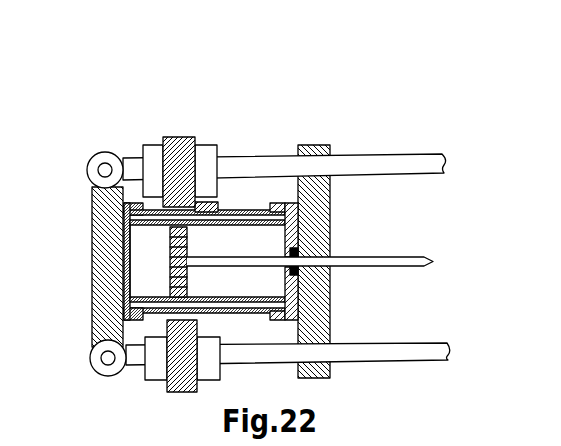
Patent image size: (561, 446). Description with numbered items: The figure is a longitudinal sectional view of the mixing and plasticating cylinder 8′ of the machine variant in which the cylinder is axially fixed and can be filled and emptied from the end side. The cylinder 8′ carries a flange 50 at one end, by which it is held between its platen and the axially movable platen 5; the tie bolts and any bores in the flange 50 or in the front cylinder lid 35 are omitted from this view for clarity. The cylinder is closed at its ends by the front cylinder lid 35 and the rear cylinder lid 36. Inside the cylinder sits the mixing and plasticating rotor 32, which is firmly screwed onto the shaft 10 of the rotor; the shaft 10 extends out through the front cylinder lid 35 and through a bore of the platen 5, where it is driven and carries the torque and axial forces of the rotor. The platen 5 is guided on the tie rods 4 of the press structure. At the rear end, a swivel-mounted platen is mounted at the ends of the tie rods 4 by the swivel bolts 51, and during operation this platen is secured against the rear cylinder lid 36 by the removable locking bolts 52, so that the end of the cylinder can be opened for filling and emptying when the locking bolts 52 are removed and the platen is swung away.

The tie rods 4 is at (140, 170).
The axially movable platen 5 is at (315, 147).
The mixing and plasticating cylinder 8′ is at (248, 206).
The shaft of the mixing and plasticating rotor 10 is at (397, 259).
The mixing and plasticating rotor 32 is at (162, 270).
The front cylinder lid 35 is at (288, 229).
The rear cylinder lid 36 is at (125, 250).
The flange 50 is at (207, 203).
The swivel bolts 51 is at (105, 170).
The removable locking bolts 52 is at (108, 358).